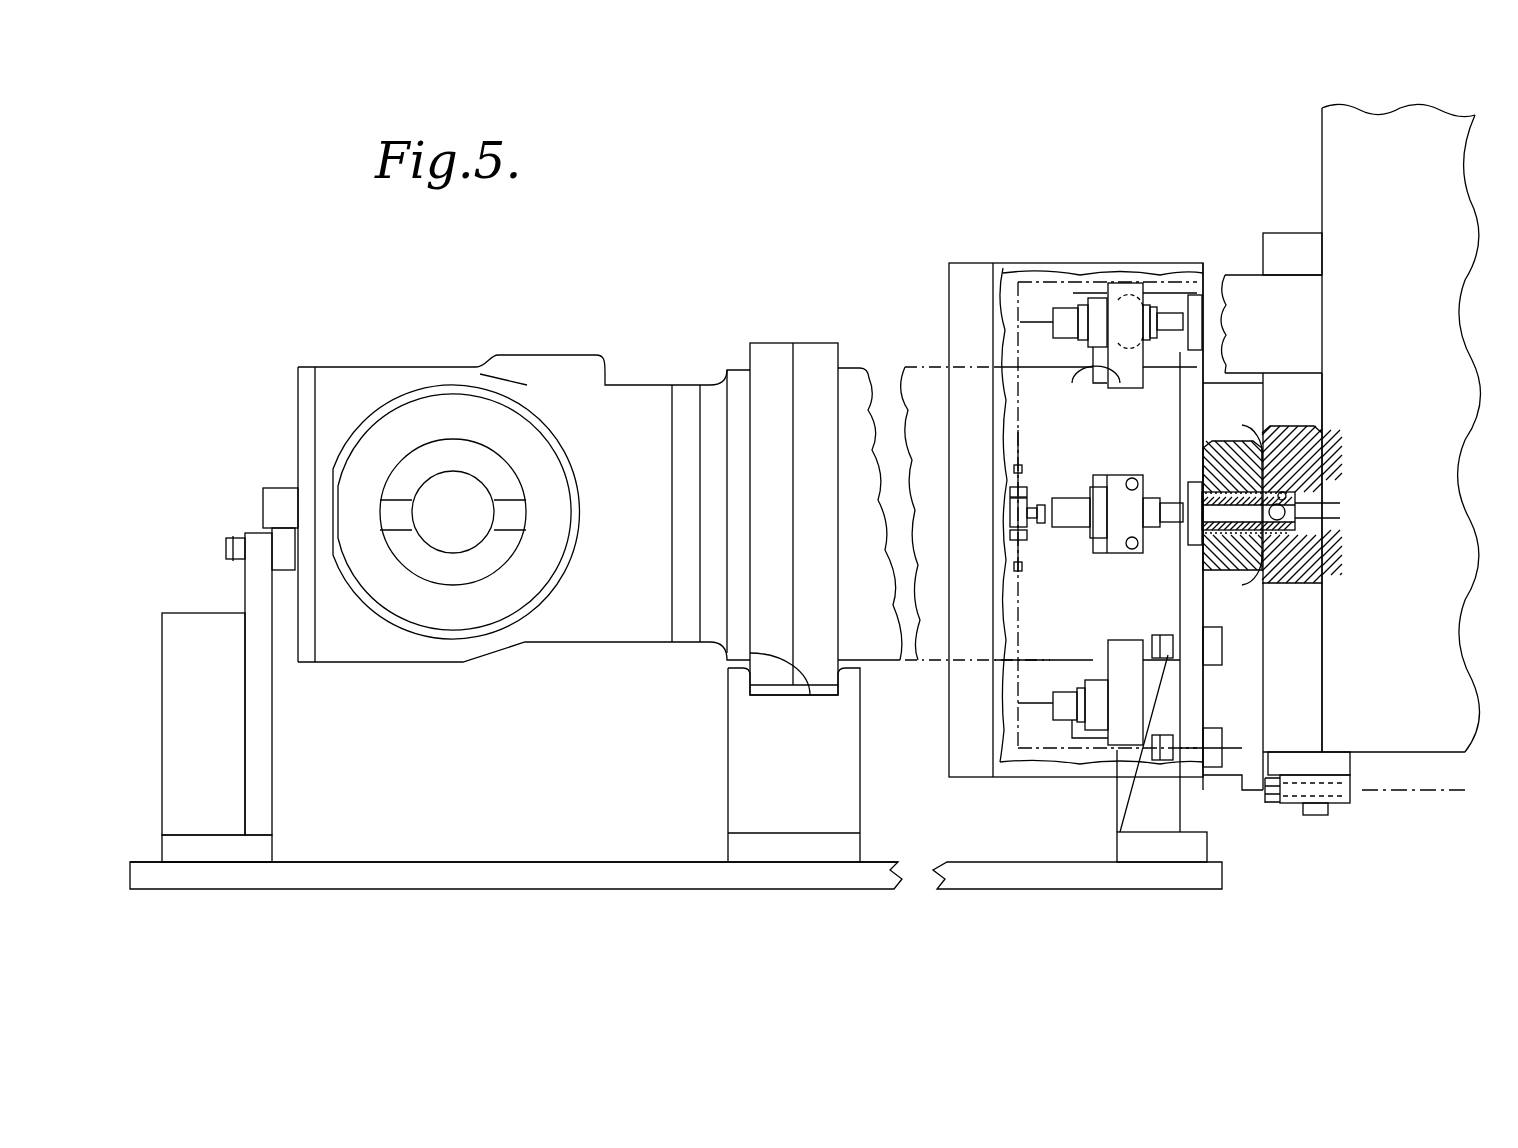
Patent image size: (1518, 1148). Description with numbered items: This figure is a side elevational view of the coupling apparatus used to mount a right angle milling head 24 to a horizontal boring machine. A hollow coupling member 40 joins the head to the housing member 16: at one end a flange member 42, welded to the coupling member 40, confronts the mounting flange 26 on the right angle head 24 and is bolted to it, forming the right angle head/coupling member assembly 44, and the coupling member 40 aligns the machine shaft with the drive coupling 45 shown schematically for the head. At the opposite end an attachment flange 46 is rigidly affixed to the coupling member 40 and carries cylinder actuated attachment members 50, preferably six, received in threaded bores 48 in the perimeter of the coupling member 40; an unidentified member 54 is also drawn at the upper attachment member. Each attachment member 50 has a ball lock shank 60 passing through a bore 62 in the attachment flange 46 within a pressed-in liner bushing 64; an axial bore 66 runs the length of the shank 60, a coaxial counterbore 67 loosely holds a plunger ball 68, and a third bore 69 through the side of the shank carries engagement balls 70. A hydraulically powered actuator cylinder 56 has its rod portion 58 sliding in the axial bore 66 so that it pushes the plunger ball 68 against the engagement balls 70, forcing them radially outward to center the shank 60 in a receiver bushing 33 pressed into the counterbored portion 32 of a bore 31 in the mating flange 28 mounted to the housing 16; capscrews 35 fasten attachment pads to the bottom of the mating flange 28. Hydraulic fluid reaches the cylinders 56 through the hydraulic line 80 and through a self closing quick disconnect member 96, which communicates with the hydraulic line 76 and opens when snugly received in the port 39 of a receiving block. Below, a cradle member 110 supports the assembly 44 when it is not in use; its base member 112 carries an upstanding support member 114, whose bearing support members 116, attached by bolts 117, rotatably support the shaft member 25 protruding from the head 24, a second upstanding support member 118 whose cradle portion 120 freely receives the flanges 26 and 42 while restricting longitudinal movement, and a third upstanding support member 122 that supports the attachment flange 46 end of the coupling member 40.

The housing member 16 is at (1404, 204).
The right angle milling head 24 is at (644, 524).
The shaft member 25 is at (292, 486).
The mounting flange 26 is at (762, 352).
The mating flange 28 is at (1308, 696).
The bores 31 is at (1300, 568).
The counterbored portion 32 is at (1300, 538).
The receiver bushing 33 is at (1300, 552).
The capscrews 35 is at (1328, 810).
The port 39 is at (1293, 812).
The coupling member 40 is at (870, 378).
The flange member 42 is at (815, 343).
The right angle head/coupling member assembly 44 is at (790, 336).
The drive coupling 45 is at (862, 487).
The attachment flange 46 is at (1212, 275).
The threaded bores 48 is at (1100, 378).
The cylinder actuated attachment members 50 is at (1060, 295).
The column 54 is at (1130, 282).
The hydraulically powered actuator cylinder 56 is at (1063, 530).
The rod portion 58 is at (1200, 452).
The ball lock shank 60 is at (1300, 522).
The bore 62 is at (1245, 562).
The liner bushing 64 is at (1205, 575).
The axial bore 66 is at (1240, 440).
The coaxial counterbore 67 is at (1335, 490).
The plunger ball 68 is at (1288, 510).
The third bore 69 is at (1322, 447).
The engagement balls 70 is at (1325, 468).
The hydraulic line 76 is at (1417, 790).
The hydraulic line 80 is at (1008, 618).
The self closing quick disconnect member 96 is at (1268, 790).
The cradle member 110 is at (583, 888).
The base member 112 is at (497, 876).
The upstanding support member 114 is at (262, 758).
The bearing support members 116 is at (283, 532).
The bolts 117 is at (236, 559).
The second upstanding support member 118 is at (810, 772).
The cradle portion 120 is at (727, 662).
The third upstanding support member 122 is at (1187, 793).